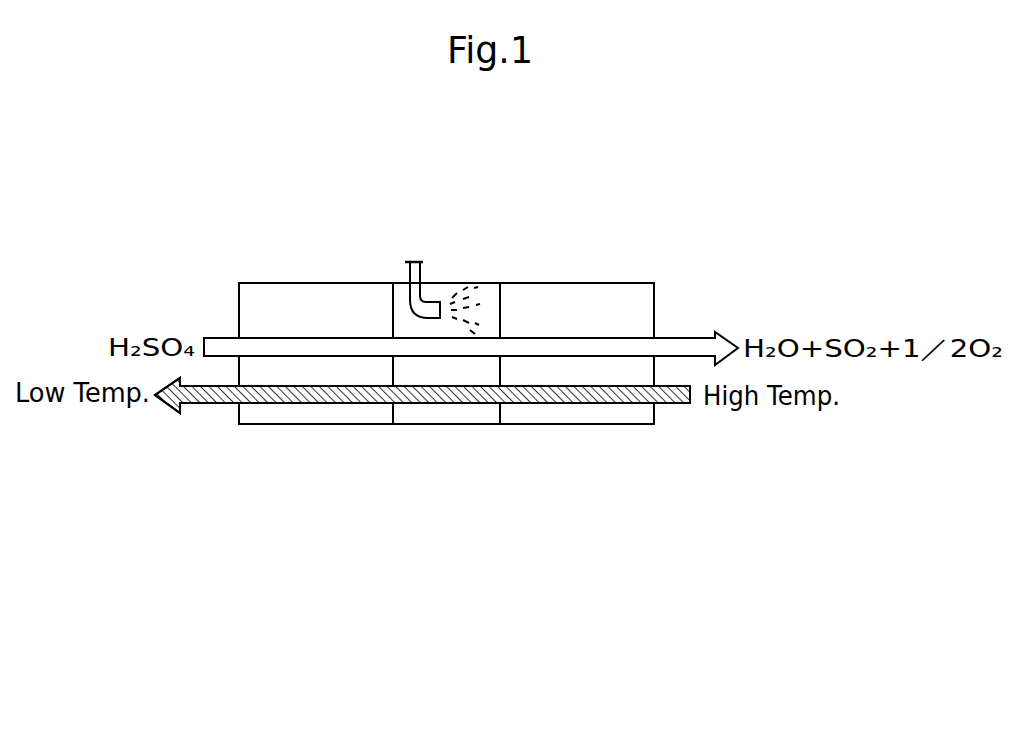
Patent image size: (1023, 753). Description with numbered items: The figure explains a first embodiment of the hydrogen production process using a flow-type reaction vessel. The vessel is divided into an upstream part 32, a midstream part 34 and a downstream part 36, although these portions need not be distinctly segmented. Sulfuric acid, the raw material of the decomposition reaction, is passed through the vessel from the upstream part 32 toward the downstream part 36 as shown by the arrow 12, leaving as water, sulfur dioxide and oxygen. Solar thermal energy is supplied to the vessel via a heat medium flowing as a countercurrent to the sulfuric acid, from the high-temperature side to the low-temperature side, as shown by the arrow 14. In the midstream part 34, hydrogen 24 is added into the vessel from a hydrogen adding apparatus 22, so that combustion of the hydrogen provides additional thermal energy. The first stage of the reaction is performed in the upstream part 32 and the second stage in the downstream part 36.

The arrow showing sulfuric acid flow 12 is at (677, 341).
The arrow showing heat medium flow 14 is at (212, 405).
The hydrogen adding apparatus 22 is at (418, 278).
The hydrogen 24 is at (472, 287).
The upstream part 32 is at (335, 412).
The midstream part 34 is at (477, 412).
The downstream part 36 is at (595, 412).